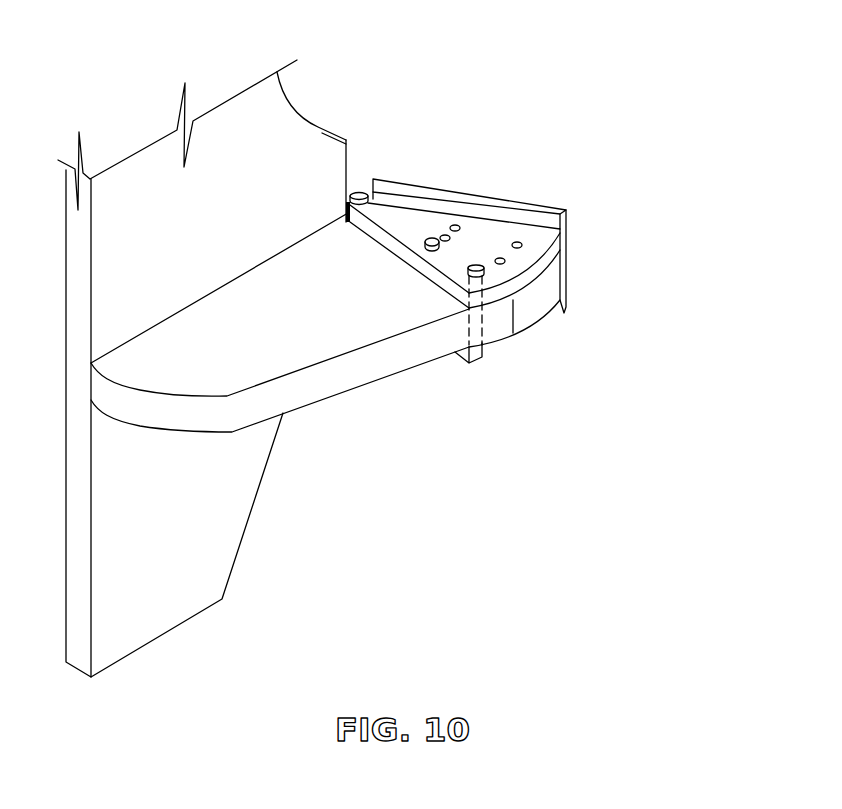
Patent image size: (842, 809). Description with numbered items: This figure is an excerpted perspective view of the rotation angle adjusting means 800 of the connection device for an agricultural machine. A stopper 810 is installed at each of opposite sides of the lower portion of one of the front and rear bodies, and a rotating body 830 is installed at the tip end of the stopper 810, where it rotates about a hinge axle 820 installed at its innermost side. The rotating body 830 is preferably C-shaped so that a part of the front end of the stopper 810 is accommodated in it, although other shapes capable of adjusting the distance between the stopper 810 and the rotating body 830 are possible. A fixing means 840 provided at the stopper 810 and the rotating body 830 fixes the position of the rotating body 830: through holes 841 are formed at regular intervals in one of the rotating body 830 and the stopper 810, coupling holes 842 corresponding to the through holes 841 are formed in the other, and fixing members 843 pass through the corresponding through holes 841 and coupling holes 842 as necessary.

The rotation angle adjusting means 800 is at (556, 219).
The stopper 810 is at (348, 368).
The hinge axle 820 is at (359, 192).
The rotating body 830 is at (433, 224).
The fixing means 840 is at (608, 324).
The through holes 841 is at (505, 261).
The coupling holes 842 is at (475, 327).
The fixing members 843 is at (485, 269).